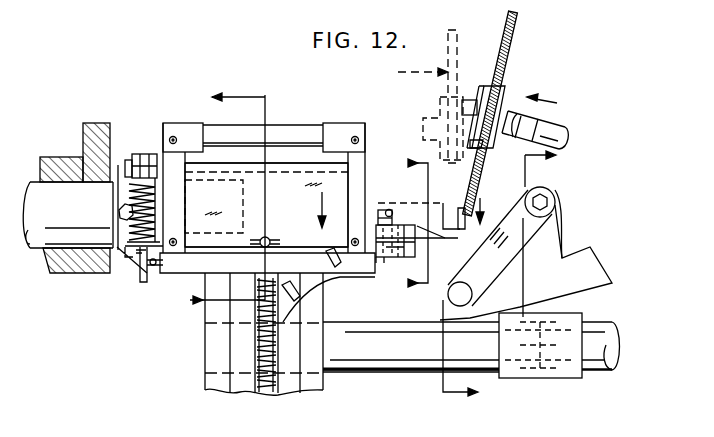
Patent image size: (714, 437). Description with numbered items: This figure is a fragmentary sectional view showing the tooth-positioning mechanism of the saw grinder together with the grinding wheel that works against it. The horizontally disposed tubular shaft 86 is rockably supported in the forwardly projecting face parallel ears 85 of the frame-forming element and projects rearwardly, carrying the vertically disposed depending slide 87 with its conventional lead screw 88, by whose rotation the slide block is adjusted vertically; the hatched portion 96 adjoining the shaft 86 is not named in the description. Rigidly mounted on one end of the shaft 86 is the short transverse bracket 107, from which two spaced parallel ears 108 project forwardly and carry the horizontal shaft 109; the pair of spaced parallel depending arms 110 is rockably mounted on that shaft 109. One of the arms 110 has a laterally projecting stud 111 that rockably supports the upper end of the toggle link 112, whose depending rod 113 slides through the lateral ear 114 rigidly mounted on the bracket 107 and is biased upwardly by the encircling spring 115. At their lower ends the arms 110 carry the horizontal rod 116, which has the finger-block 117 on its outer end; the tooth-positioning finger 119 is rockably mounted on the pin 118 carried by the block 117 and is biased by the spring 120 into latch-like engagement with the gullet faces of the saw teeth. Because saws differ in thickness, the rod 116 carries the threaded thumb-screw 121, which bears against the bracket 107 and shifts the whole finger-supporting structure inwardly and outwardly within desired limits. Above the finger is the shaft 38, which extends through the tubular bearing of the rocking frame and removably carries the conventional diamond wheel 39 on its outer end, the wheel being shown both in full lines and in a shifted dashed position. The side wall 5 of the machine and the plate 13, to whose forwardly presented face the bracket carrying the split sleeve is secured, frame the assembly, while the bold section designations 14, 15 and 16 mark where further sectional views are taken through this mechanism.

The side wall 5 is at (604, 277).
The plate 13 is at (215, 198).
The section line 14 is at (403, 206).
The section line 15 is at (406, 226).
The section line 16 is at (516, 281).
The shaft 38 is at (566, 122).
The diamond wheel 39 is at (457, 42).
The face parallel ears 85 is at (83, 130).
The tubular shaft 86 is at (45, 236).
The slide 87 is at (212, 364).
The lead screw 88 is at (264, 393).
The lower bearing block 96 is at (76, 272).
The transverse bracket 107 is at (164, 282).
The ears 108 is at (200, 129).
The horizontal shaft 109 is at (256, 125).
The depending arms 110 is at (183, 209).
The stud 111 is at (128, 152).
The toggle link 112 is at (147, 155).
The depending rod 113 is at (147, 283).
The lateral ear 114 is at (130, 257).
The spring 115 is at (133, 195).
The horizontal rod 116 is at (293, 240).
The finger-block 117 is at (380, 258).
The pin 118 is at (396, 257).
The tooth-positioning finger 119 is at (437, 240).
The spring 120 is at (399, 211).
The thumb-screw 121 is at (257, 248).